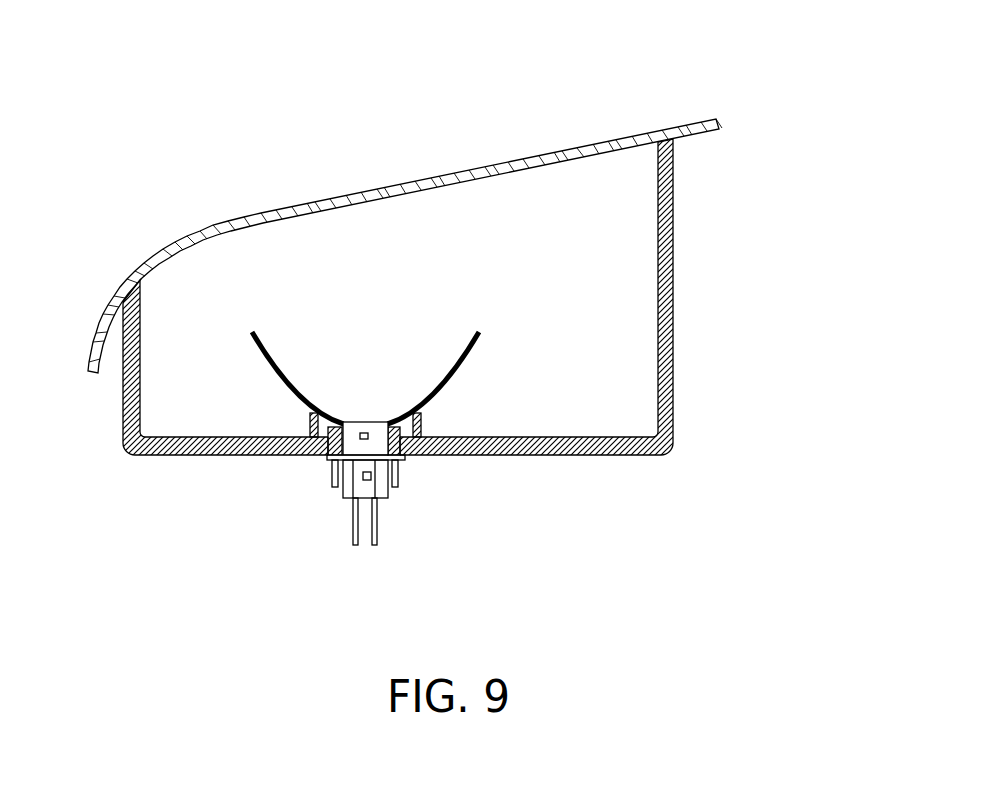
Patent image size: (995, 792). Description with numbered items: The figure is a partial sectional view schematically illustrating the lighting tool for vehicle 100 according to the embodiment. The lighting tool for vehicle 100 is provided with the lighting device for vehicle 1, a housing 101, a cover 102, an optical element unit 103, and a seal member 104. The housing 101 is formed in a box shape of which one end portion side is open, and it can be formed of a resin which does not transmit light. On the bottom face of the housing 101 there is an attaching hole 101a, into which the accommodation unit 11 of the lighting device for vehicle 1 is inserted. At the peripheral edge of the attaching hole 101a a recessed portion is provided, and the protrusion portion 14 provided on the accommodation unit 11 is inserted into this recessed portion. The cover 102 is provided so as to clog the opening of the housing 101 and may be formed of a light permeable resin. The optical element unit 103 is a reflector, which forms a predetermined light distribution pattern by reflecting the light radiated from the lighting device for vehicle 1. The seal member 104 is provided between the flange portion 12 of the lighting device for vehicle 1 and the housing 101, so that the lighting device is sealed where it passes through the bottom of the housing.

The lighting tool for vehicle 100 is at (748, 86).
The housing 101 is at (673, 346).
The attaching hole 101a is at (383, 445).
The cover 102 is at (280, 208).
The optical element unit 103 is at (280, 380).
The seal member 104 is at (327, 455).
The lighting device for vehicle 1 is at (337, 508).
The accommodation unit 11 is at (377, 432).
The flange portion 12 is at (333, 483).
The protrusion portion 14 is at (354, 418).